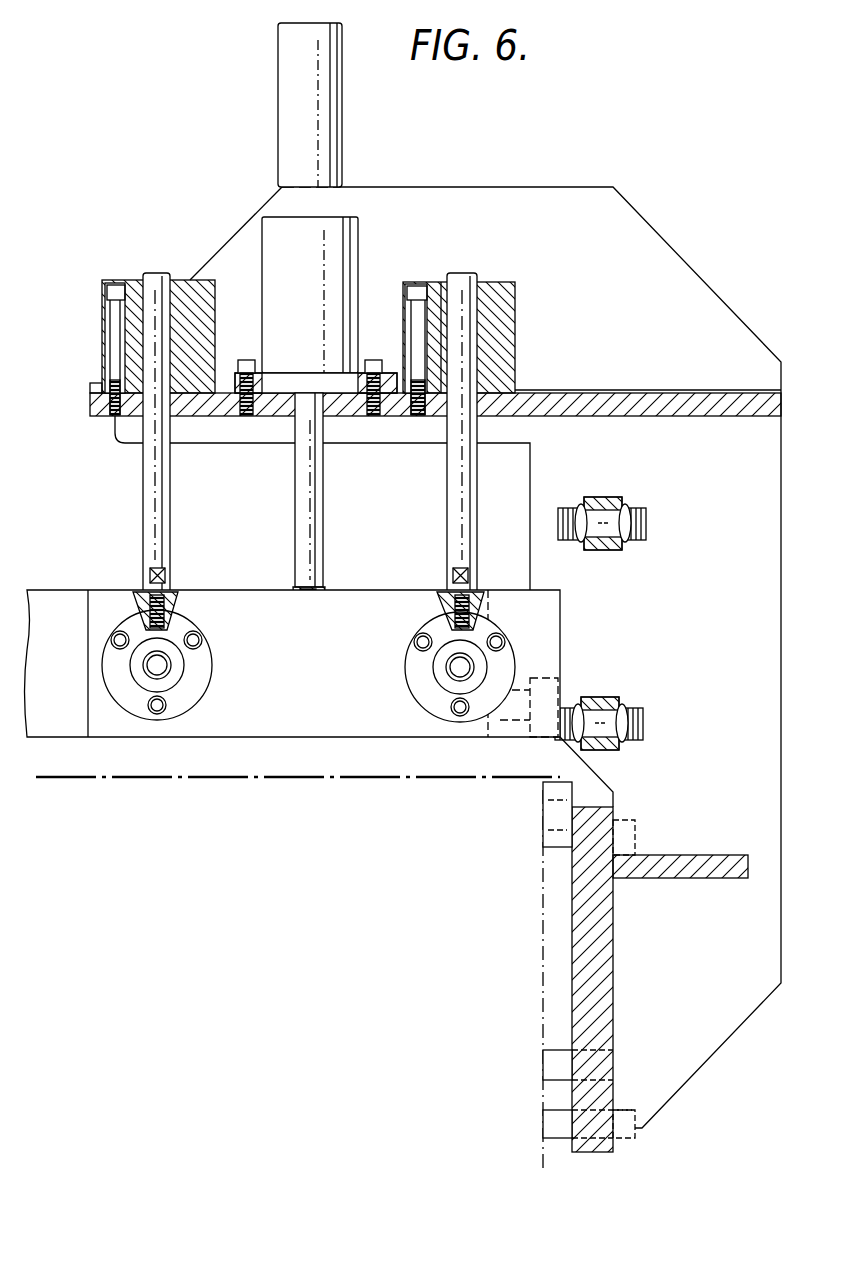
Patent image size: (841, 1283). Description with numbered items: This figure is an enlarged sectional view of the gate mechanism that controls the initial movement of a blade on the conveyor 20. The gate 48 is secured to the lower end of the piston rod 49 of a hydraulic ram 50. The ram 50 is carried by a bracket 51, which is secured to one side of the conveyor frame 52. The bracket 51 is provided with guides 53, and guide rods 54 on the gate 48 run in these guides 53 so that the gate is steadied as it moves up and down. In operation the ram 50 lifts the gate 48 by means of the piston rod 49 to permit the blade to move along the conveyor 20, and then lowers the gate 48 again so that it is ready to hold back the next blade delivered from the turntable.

The conveyor 20 is at (330, 780).
The gate 48 is at (253, 607).
The piston rod 49 is at (308, 537).
The hydraulic ram 50 is at (330, 257).
The bracket 51 is at (717, 333).
The conveyor frame 52 is at (557, 948).
The guides 53 is at (190, 290).
The guide rods 54 is at (157, 493).